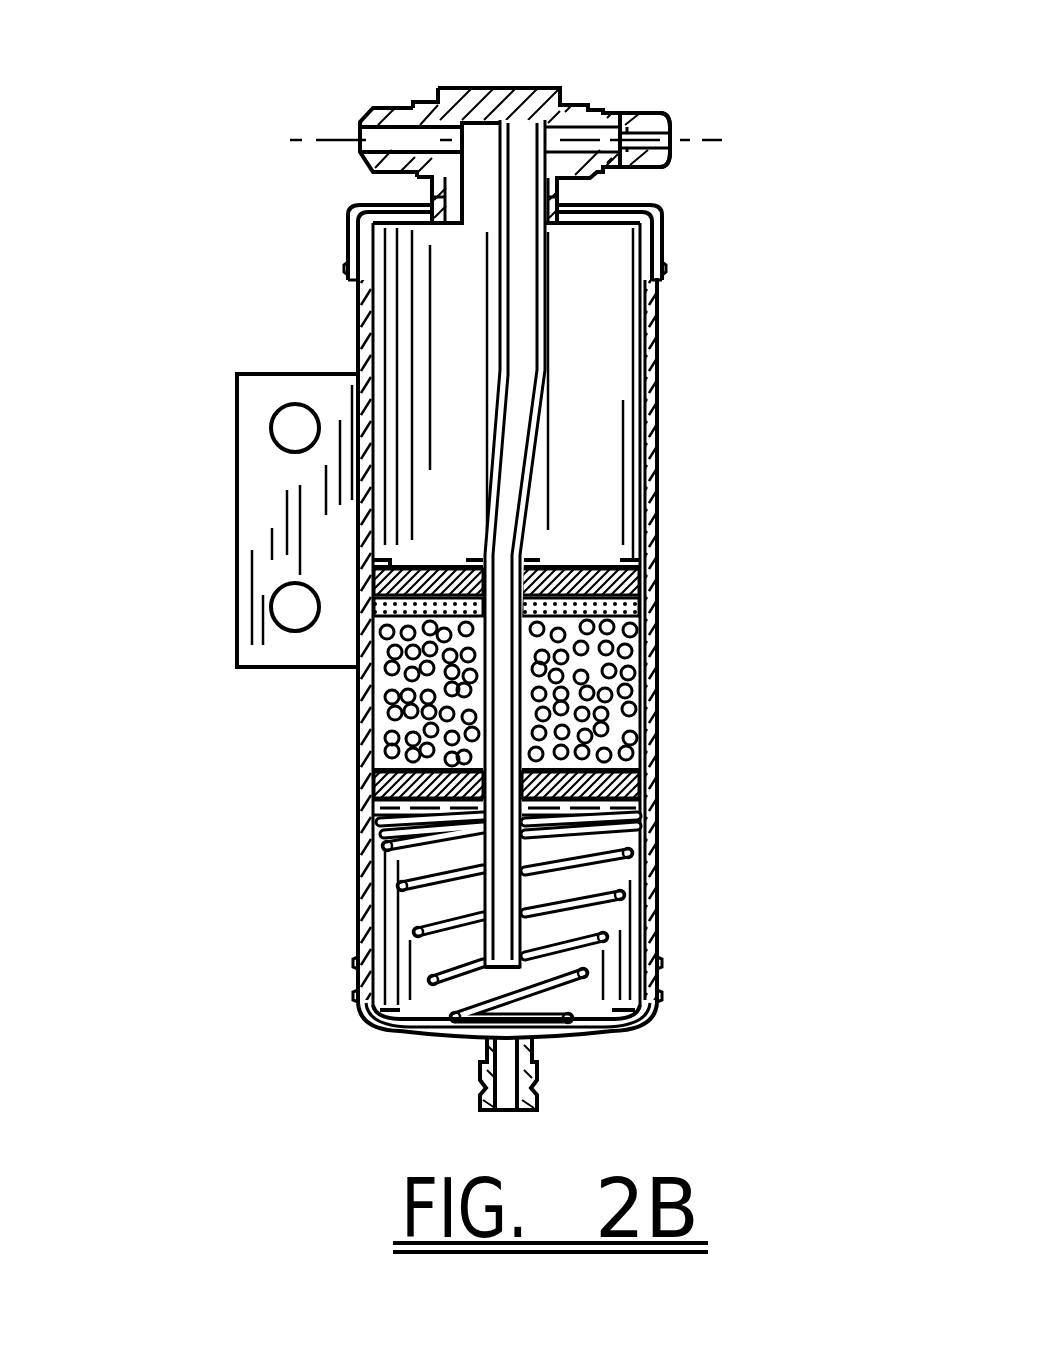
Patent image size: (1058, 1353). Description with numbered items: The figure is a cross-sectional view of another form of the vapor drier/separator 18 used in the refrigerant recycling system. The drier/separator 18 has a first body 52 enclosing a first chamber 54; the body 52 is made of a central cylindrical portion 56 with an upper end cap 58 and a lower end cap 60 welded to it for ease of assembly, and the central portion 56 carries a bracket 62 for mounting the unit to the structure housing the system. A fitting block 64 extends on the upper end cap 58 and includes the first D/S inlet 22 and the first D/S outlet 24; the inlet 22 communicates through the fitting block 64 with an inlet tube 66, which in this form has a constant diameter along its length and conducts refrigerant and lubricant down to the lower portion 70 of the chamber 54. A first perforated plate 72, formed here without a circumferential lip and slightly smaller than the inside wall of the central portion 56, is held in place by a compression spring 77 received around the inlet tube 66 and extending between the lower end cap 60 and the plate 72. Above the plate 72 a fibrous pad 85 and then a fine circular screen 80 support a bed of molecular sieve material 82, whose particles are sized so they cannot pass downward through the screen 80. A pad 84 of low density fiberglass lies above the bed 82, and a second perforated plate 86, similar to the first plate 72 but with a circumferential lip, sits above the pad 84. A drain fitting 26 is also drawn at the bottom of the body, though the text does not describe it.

The drier/separator 18 is at (740, 415).
The first D/S inlet 22 is at (645, 115).
The first D/S outlet 24 is at (385, 105).
The drain fitting 26 is at (533, 1093).
The first body 52 is at (725, 360).
The first chamber 54 is at (589, 511).
The central cylindrical portion 56 is at (653, 485).
The upper end cap 58 is at (668, 242).
The lower end cap 60 is at (663, 992).
The bracket 62 is at (235, 433).
The fitting block 64 is at (485, 88).
The inlet tube 66 is at (550, 330).
The lower portion of chamber 70 is at (410, 1003).
The first perforated plate 72 is at (655, 801).
The compression spring 77 is at (430, 925).
The fine circular screen 80 is at (606, 783).
The bed of molecular sieve material 82 is at (655, 720).
The pad of fibrous material 84 is at (655, 631).
The fibrous pad 85 is at (372, 778).
The second perforated plate 86 is at (655, 554).